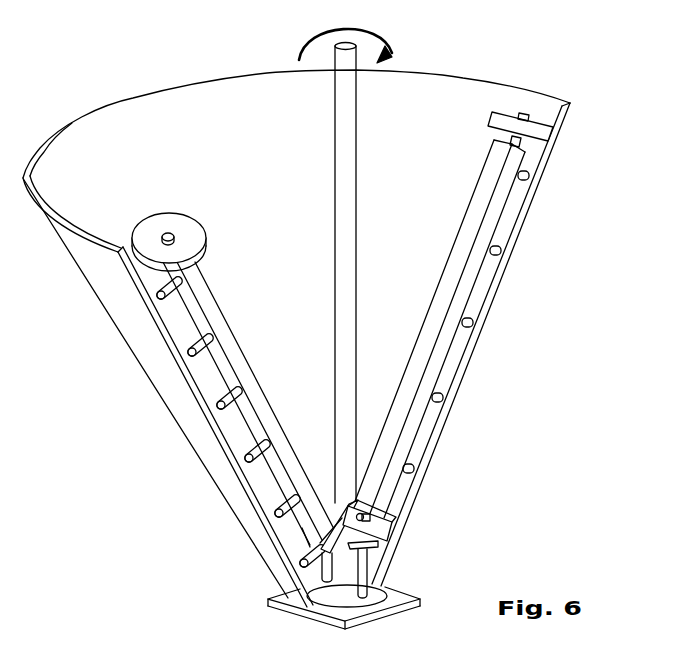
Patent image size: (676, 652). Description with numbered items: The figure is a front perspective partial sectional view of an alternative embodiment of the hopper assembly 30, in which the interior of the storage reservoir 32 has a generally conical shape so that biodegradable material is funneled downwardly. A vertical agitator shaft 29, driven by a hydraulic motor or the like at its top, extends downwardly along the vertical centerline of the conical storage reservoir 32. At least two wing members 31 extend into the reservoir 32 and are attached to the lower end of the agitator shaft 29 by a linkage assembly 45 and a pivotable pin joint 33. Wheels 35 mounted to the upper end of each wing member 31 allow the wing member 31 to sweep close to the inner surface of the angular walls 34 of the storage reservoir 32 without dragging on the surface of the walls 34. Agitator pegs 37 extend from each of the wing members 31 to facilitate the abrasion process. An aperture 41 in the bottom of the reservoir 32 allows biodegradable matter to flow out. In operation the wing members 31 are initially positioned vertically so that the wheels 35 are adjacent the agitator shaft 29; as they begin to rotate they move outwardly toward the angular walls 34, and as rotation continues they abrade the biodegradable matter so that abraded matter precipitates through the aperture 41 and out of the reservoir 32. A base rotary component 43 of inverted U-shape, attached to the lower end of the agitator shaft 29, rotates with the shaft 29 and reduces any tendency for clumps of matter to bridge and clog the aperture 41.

The agitator shaft 29 is at (347, 130).
The hopper assembly 30 is at (562, 243).
The wing members 31 is at (212, 312).
The storage reservoir 32 is at (118, 131).
The pivotable pin joint 33 is at (370, 517).
The angular walls 34 is at (107, 287).
The wheels 35 is at (188, 230).
The agitator pegs 37 is at (257, 450).
The aperture 41 is at (410, 602).
The base rotary component 43 is at (326, 571).
The linkage assembly 45 is at (333, 538).